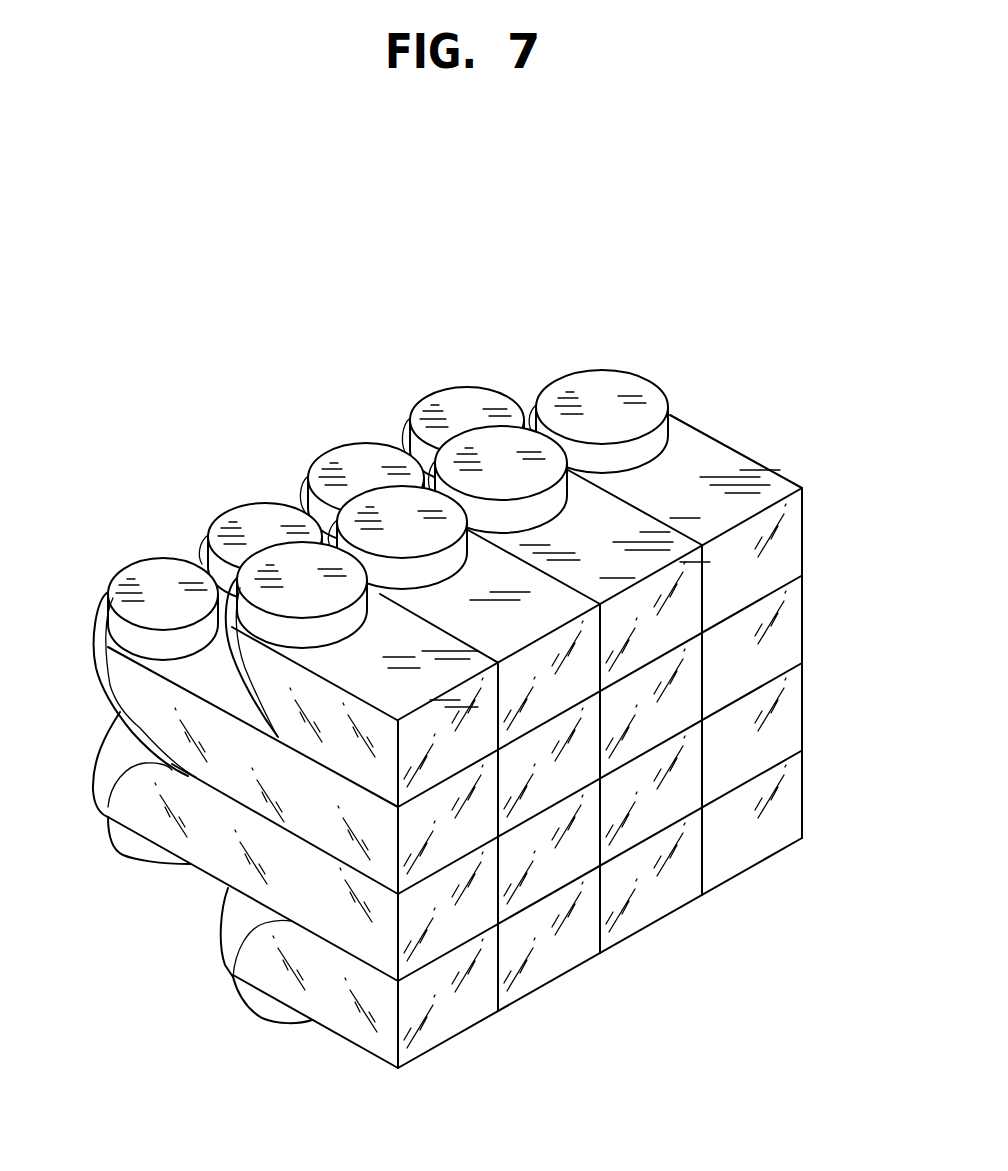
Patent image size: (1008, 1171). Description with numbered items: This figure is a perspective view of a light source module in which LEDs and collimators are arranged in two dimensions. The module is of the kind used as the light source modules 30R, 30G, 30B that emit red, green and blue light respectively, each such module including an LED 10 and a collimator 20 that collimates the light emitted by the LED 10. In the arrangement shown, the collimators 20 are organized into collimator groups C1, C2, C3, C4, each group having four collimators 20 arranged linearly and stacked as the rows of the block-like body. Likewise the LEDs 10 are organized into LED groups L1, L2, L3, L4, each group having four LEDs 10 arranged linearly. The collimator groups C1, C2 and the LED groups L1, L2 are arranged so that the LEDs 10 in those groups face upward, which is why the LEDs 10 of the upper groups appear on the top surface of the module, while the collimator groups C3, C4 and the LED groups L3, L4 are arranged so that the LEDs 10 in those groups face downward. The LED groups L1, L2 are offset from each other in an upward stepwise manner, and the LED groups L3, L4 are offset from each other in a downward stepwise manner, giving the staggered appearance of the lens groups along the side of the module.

The LED 10 is at (665, 440).
The collimator 20 is at (232, 667).
The light source module 30R is at (330, 392).
The light source module 30G is at (463, 435).
The light source module 30B is at (447, 507).
The LED group L1 is at (277, 563).
The LED group L2 is at (162, 572).
The LED group L3 is at (147, 863).
The LED group L4 is at (262, 1007).
The collimator group C1 is at (803, 530).
The collimator group C2 is at (803, 617).
The collimator group C3 is at (803, 708).
The collimator group C4 is at (803, 793).